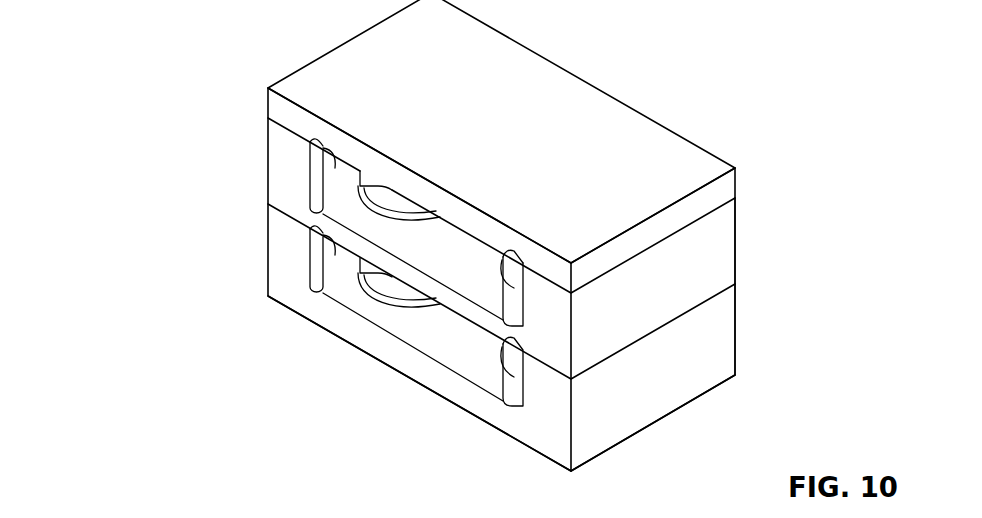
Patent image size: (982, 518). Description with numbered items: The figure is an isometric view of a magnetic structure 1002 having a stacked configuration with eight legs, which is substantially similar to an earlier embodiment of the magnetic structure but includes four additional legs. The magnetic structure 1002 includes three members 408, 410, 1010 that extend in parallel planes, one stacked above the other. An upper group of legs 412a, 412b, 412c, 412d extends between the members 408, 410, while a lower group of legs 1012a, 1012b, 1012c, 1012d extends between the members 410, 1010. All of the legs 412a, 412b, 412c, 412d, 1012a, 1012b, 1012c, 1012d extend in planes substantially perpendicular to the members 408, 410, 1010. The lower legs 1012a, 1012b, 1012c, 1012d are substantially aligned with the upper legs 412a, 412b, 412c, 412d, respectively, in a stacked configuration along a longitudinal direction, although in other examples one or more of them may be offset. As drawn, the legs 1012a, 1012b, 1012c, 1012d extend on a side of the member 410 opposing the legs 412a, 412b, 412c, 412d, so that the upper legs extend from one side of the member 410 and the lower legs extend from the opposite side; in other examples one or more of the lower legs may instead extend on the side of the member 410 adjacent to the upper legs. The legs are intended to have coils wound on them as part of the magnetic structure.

The magnetic structure 1002 is at (148, 47).
The member 408 is at (597, 108).
The member 410 is at (407, 273).
The leg 412a is at (268, 164).
The leg 412b is at (390, 202).
The leg 412c is at (510, 264).
The leg 412d is at (722, 250).
The member 1010 is at (403, 360).
The leg 1012a is at (278, 268).
The leg 1012b is at (382, 280).
The leg 1012c is at (513, 357).
The leg 1012d is at (637, 415).